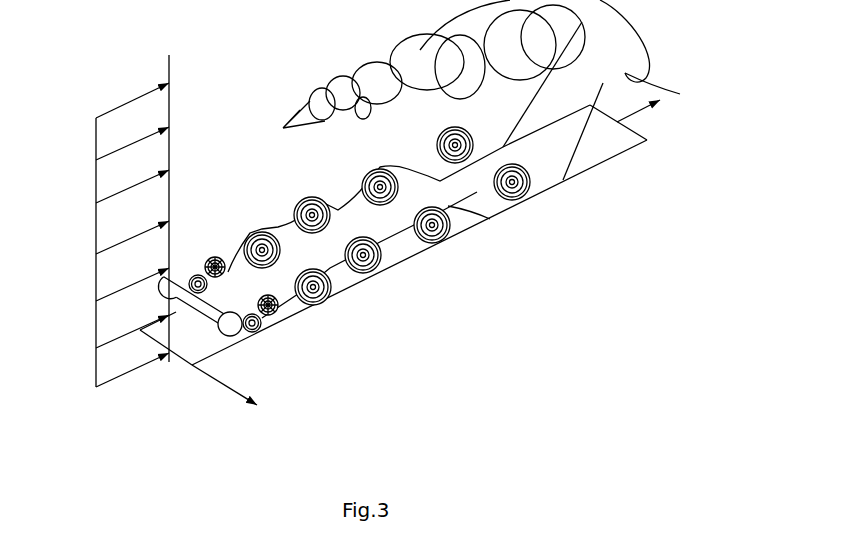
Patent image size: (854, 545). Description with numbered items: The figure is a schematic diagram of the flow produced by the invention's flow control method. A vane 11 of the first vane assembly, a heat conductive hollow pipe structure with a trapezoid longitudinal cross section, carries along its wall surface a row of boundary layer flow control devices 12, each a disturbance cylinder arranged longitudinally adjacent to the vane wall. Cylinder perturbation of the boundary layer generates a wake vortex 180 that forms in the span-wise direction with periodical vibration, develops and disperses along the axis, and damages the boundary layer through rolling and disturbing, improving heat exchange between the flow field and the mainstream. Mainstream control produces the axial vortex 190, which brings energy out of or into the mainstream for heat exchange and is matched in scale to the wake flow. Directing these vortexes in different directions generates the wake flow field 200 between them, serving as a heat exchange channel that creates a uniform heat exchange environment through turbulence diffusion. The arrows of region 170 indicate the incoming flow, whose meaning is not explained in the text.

The vane 11 is at (192, 365).
The boundary layer flow control device 12 is at (240, 327).
The sheet stack / feed plate 170 is at (108, 183).
The wake vortex 180 is at (360, 178).
The axial vortex 190 is at (426, 141).
The wake flow field 200 is at (603, 83).